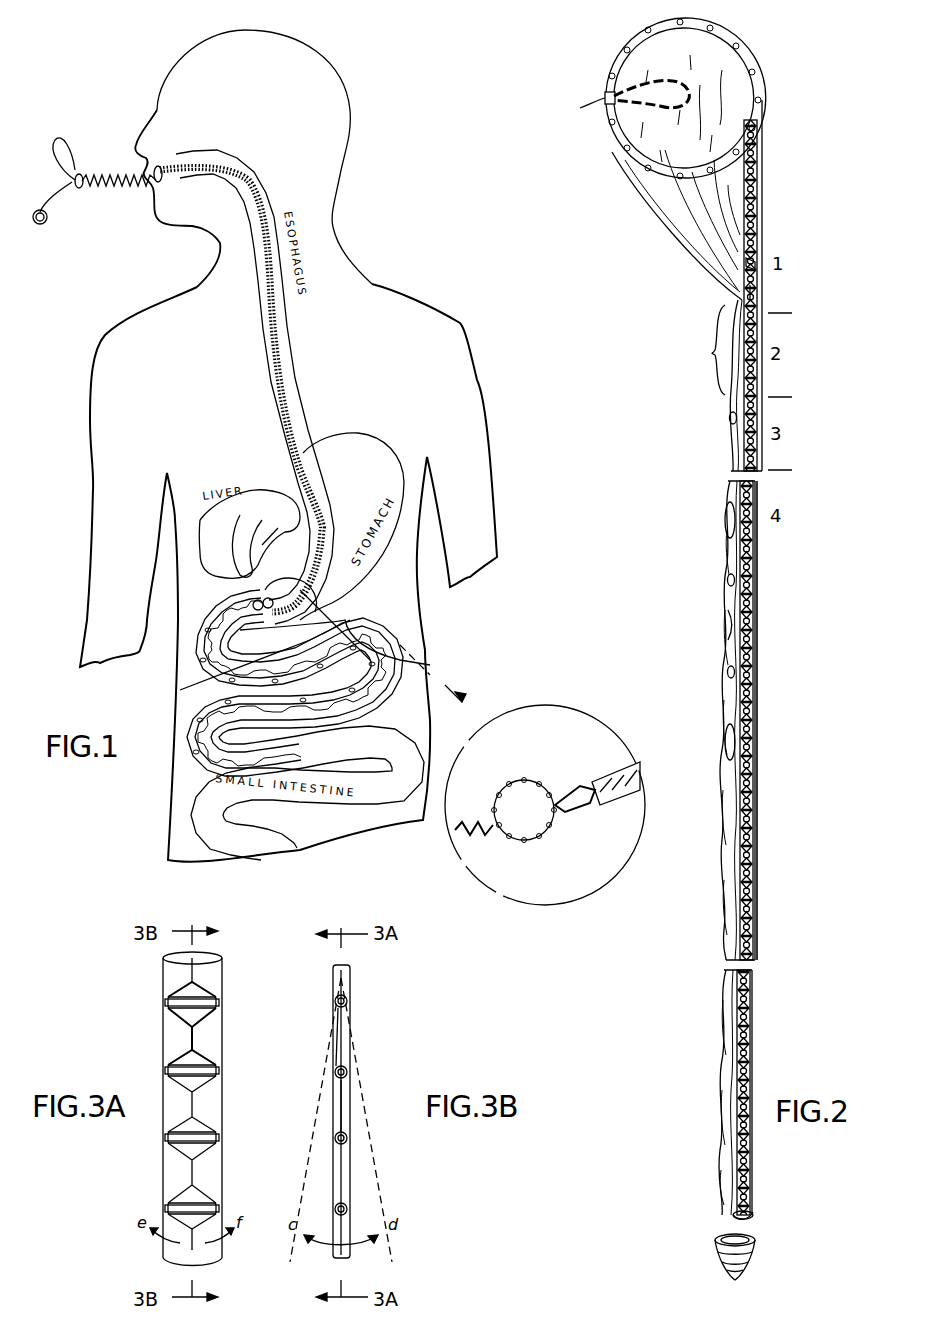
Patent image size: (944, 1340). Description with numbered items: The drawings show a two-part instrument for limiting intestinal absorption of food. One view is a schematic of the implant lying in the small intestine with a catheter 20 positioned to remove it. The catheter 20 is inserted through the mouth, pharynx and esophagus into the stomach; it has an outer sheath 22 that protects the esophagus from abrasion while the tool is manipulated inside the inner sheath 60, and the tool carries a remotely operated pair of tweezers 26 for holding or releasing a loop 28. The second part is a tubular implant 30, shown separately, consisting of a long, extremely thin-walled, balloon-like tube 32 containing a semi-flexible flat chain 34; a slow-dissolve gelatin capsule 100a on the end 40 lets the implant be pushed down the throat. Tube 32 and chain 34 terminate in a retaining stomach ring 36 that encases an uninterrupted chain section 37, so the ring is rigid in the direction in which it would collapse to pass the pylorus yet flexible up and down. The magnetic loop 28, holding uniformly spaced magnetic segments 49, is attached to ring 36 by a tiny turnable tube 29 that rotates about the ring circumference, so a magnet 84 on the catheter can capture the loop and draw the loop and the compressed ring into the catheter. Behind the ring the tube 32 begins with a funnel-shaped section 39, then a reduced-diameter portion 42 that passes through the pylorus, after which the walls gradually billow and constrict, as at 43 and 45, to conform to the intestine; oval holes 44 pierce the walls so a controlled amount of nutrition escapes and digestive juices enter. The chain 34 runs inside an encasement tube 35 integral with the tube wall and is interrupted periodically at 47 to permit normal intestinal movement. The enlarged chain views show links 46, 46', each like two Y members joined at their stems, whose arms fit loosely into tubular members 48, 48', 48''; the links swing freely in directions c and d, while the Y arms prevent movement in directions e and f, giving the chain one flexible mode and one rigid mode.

In FIG. 1, the catheter 20 is at (292, 357).
In FIG. 1, the outer sheath 22 is at (150, 180).
In FIG. 1, the tweezers 26 is at (266, 600).
In FIG. 1, the loop 28 is at (180, 690).
In FIG. 2, the loop 28 is at (668, 88).
In FIG. 2, the turnable tube 29 is at (604, 98).
In FIG. 1, the tubular implant 30 is at (372, 636).
In FIG. 2, the tubular implant 30 is at (722, 524).
In FIG. 1, the balloon-like tube 32 is at (432, 667).
In FIG. 2, the balloon-like tube 32 is at (732, 740).
In FIG. 1, the flat chain 34 is at (315, 652).
In FIG. 2, the flat chain 34 is at (762, 373).
In FIG. 2, the encasement tube 35 is at (760, 790).
In FIG. 3A, the encasement tube 35 is at (222, 1172).
In FIG. 3B, the encasement tube 35 is at (350, 1176).
In FIG. 1, the retaining ring 36 is at (280, 591).
In FIG. 2, the retaining ring 36 is at (765, 100).
In FIG. 1, the chain section 37 is at (530, 842).
In FIG. 2, the chain section 37 is at (747, 53).
In FIG. 2, the funnel-shaped section 39 is at (670, 236).
In FIG. 2, the end 40 is at (735, 1210).
In FIG. 2, the reduced diameter portion 42 is at (696, 350).
In FIG. 2, the billowed wall 43 is at (738, 622).
In FIG. 2, the oval holes 44 is at (730, 418).
In FIG. 2, the constricted wall 45 is at (732, 580).
In FIG. 2, the links 46 is at (793, 296).
In FIG. 3A, the links 46 is at (223, 1105).
In FIG. 3B, the links 46 is at (370, 1147).
In FIG. 3B, the hinge link 46' is at (385, 1037).
In FIG. 2, the interrupted areas 47 is at (762, 638).
In FIG. 2, the tubular member 48 is at (798, 265).
In FIG. 3A, the tubular member 48 is at (225, 1090).
In FIG. 3B, the rigid link 48' is at (380, 994).
In FIG. 3B, the rigid link 48'' is at (379, 1076).
In FIG. 2, the magnetic segments 49 is at (690, 90).
In FIG. 1, the inner sheath 60 is at (95, 160).
In FIG. 1, the magnet 84 is at (595, 778).
In FIG. 2, the gelatin capsule 100a is at (752, 1257).